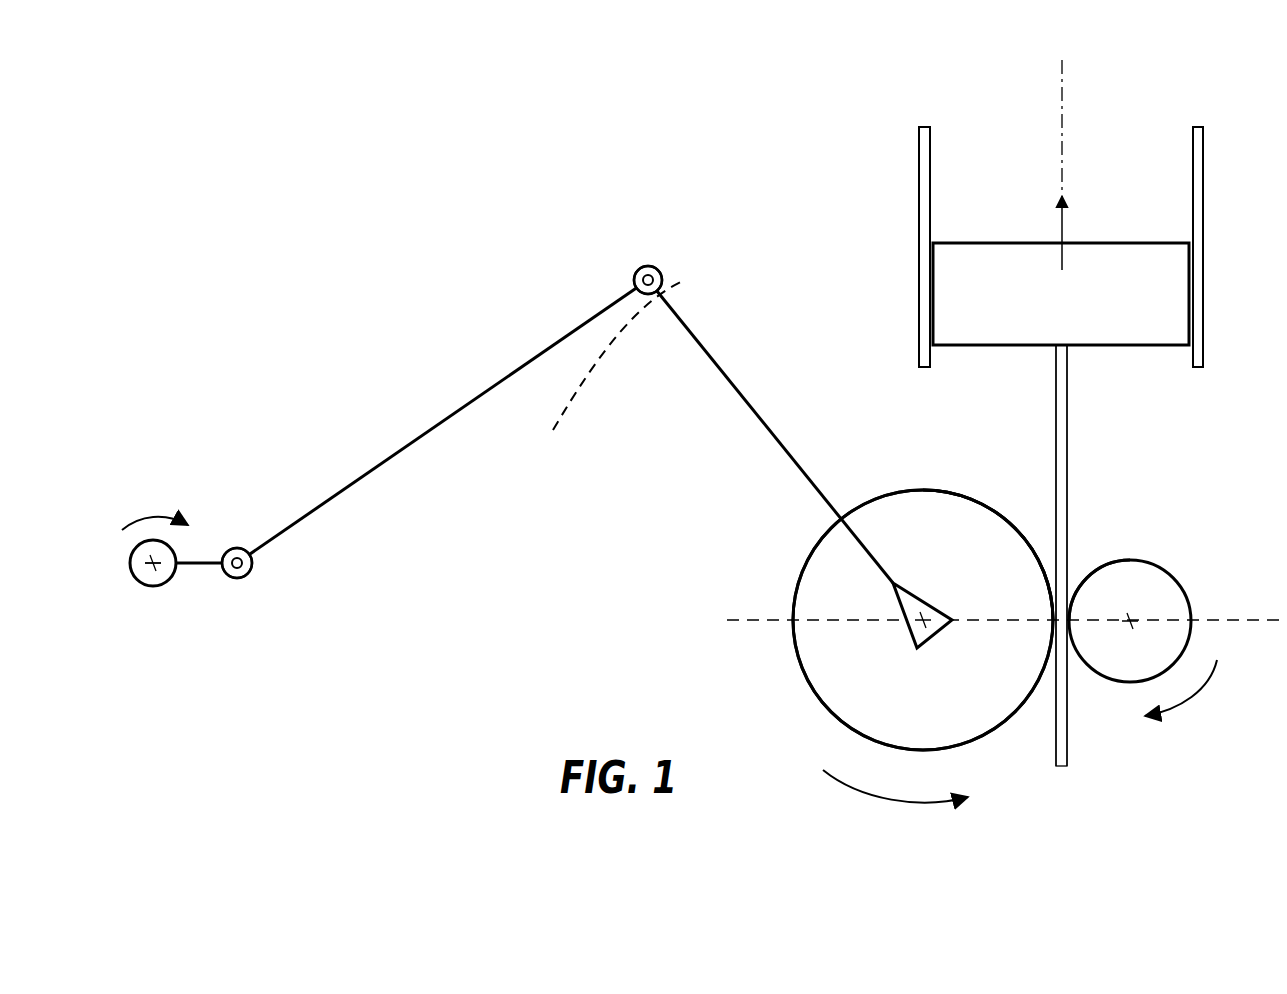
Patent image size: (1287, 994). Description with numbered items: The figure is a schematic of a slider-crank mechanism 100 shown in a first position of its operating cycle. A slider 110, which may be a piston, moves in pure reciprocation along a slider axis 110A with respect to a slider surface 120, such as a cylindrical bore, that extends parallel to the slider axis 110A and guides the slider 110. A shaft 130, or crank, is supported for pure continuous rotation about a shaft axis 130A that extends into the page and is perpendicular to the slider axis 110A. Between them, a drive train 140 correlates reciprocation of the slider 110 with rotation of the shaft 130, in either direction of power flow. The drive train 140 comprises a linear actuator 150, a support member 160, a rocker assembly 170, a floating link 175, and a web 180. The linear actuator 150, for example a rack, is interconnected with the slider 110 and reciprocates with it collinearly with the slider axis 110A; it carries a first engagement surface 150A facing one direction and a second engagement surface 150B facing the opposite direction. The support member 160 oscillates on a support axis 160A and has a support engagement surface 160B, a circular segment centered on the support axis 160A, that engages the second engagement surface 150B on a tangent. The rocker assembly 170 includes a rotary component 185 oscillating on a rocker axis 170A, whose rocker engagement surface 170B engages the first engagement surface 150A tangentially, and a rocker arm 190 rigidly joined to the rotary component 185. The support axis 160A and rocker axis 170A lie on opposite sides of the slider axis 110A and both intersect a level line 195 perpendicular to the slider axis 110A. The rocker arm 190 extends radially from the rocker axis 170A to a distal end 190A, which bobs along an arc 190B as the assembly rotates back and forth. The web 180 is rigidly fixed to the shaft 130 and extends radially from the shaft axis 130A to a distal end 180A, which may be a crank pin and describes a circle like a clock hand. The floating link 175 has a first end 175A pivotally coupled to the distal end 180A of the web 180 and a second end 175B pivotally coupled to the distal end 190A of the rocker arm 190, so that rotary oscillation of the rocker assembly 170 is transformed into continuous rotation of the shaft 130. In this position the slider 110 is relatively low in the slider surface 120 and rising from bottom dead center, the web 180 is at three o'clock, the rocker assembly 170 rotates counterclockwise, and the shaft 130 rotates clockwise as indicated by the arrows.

The slider-crank mechanism 100 is at (763, 124).
The slider 110 is at (1157, 258).
The slider axis 110A is at (1062, 160).
The slider surface 120 is at (918, 212).
The shaft 130 is at (130, 555).
The shaft axis 130A is at (150, 570).
The drive train 140 is at (640, 228).
The linear actuator 150 is at (1070, 483).
The first engagement surface 150A is at (1052, 410).
The second engagement surface 150B is at (1070, 438).
The support member 160 is at (1175, 578).
The support axis 160A is at (1127, 625).
The support engagement surface 160B is at (1072, 595).
The rocker assembly 170 is at (1005, 737).
The rocker axis 170A is at (922, 622).
The rocker engagement surface 170B is at (1050, 580).
The floating link 175 is at (392, 455).
The first end 175A is at (253, 550).
The second end 175B is at (633, 290).
The web 180 is at (205, 570).
The distal end 180A is at (238, 580).
The rotary component 185 is at (866, 700).
The rocker arm 190 is at (770, 440).
The distal end 190A is at (675, 297).
The arc 190B is at (587, 387).
The level line 195 is at (765, 620).